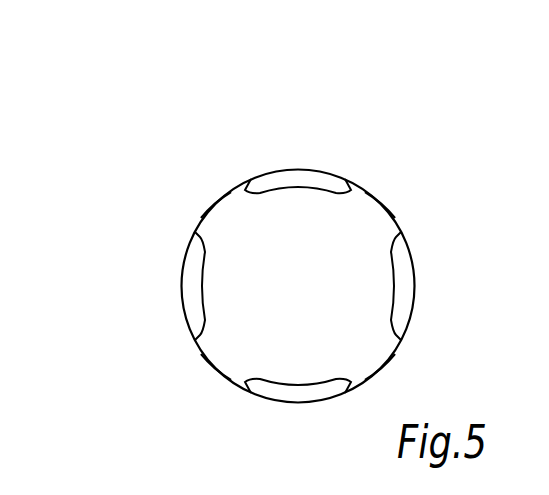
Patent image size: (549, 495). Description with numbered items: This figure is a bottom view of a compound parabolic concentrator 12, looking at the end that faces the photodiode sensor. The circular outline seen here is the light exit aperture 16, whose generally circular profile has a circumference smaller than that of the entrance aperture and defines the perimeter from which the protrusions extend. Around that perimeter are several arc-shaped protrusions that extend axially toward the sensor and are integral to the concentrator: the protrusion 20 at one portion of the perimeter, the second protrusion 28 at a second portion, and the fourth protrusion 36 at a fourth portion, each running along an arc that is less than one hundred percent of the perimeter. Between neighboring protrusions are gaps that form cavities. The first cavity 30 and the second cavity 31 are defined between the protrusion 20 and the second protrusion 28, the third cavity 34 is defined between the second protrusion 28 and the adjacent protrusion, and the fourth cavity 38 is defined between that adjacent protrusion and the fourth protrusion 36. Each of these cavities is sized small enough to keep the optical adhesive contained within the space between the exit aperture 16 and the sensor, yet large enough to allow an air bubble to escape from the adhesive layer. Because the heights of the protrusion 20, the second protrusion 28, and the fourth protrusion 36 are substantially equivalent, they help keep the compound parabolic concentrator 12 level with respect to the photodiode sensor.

The compound parabolic concentrator 12 is at (89, 115).
The light exit aperture 16 is at (327, 308).
The protrusion 20 is at (297, 176).
The second protrusion 28 is at (407, 280).
The first cavity 30 is at (220, 208).
The second cavity 31 is at (218, 363).
The third cavity 34 is at (373, 207).
The fourth protrusion 36 is at (188, 290).
The fourth cavity 38 is at (376, 362).